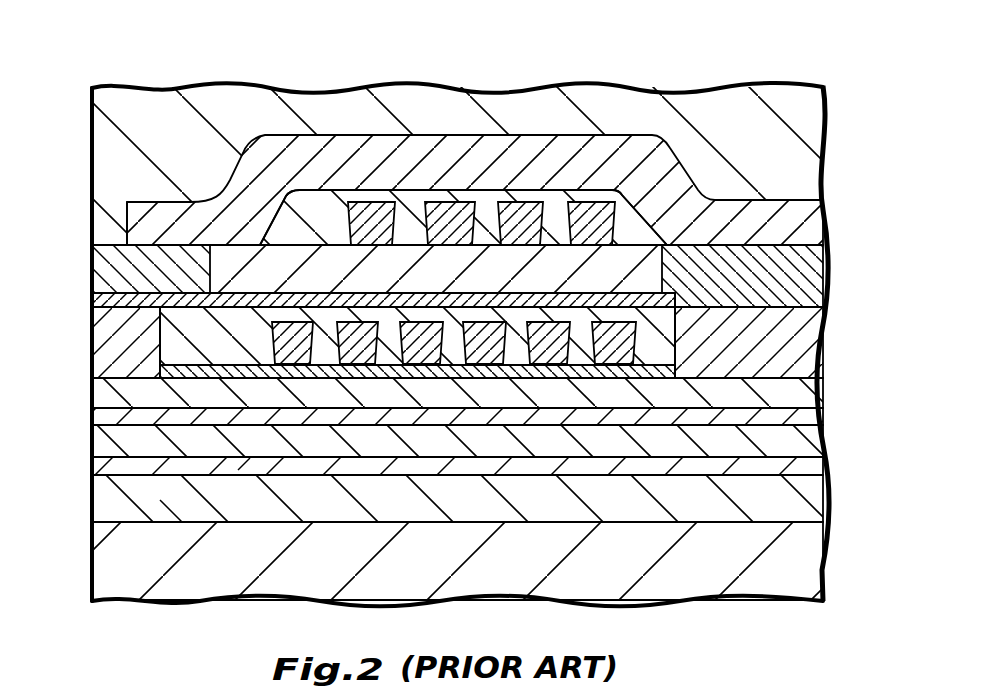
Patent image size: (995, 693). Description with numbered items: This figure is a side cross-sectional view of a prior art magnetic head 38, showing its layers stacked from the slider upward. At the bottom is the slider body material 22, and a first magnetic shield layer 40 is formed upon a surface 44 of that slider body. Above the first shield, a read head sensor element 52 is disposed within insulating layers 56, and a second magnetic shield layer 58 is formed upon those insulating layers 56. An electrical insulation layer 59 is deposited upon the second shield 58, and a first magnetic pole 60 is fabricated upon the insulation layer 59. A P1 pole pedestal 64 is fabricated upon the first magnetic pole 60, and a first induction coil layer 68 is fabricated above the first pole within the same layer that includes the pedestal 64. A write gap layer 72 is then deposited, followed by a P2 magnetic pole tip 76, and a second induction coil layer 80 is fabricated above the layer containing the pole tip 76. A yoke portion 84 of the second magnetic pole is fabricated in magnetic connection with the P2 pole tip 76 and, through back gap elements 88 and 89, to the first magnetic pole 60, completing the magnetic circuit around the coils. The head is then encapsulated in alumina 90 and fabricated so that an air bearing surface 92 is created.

The magnetic head 38 is at (215, 70).
The air bearing surface 92 is at (92, 92).
The alumina 90 is at (803, 175).
The yoke portion of the second magnetic pole 84 is at (232, 182).
The second induction coil layer 80 is at (318, 207).
The P2 magnetic pole tip 76 is at (97, 266).
The back gap element 88 is at (803, 277).
The write gap layer 72 is at (100, 299).
The back gap element 89 is at (797, 347).
The P1 pole pedestal 64 is at (100, 350).
The first induction coil layer 68 is at (172, 333).
The first magnetic pole (P1) 60 is at (100, 390).
The electrical insulation layer 59 is at (100, 418).
The second magnetic shield layer (S2) 58 is at (100, 450).
The read head sensor element 52 is at (123, 467).
The insulating layers 56 is at (245, 467).
The first magnetic shield layer (S1) 40 is at (103, 502).
The surface of the slider body material 44 is at (165, 521).
The slider body material 22 is at (103, 563).